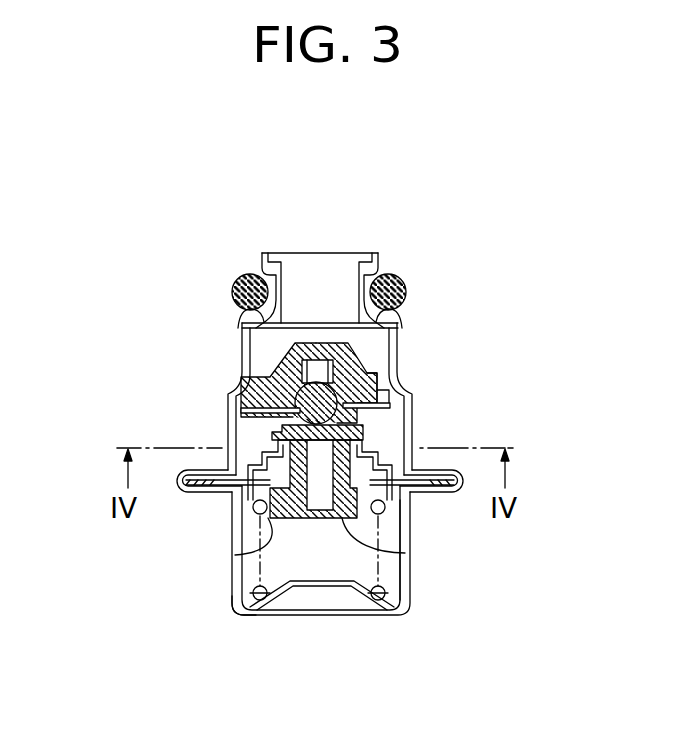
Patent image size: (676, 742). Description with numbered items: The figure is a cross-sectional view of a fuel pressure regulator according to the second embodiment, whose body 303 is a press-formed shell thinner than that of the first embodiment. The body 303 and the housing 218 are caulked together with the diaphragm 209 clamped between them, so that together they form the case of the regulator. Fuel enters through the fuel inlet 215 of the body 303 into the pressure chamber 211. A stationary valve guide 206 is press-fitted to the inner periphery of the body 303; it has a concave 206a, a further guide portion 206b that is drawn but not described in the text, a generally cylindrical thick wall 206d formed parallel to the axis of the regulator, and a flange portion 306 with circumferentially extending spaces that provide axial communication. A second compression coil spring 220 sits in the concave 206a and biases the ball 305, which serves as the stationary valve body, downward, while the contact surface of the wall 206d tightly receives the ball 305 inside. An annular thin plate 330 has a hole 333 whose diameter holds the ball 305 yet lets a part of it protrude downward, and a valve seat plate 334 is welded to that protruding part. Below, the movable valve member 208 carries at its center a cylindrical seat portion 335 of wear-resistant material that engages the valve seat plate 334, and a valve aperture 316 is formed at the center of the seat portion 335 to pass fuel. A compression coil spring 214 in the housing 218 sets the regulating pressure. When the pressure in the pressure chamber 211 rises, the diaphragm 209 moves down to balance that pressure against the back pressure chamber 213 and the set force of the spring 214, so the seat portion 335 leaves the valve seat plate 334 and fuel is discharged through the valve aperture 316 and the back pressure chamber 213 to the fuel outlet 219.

The stationary valve guide 206 is at (310, 360).
The concave 206a is at (228, 340).
The bore 206b is at (327, 358).
The cylindrical thick wall 206d is at (389, 396).
The fuel inlet 215 is at (337, 280).
The second compression coil spring 220 is at (340, 393).
The body 303 is at (370, 370).
The ball 305 is at (380, 378).
The flange portion 306 is at (240, 380).
The valve seat plate 334 is at (246, 410).
The annular thin plate 330 is at (390, 408).
The hole 333 is at (365, 432).
The pressure chamber 211 is at (229, 405).
The diaphragm 209 is at (236, 442).
The movable valve member 208 is at (250, 515).
The valve aperture 316 is at (317, 518).
The cylindrical seat portion 335 is at (407, 552).
The housing 218 is at (409, 596).
The back pressure chamber 213 is at (365, 573).
The fuel outlet 219 is at (310, 592).
The compression coil spring 214 is at (237, 608).